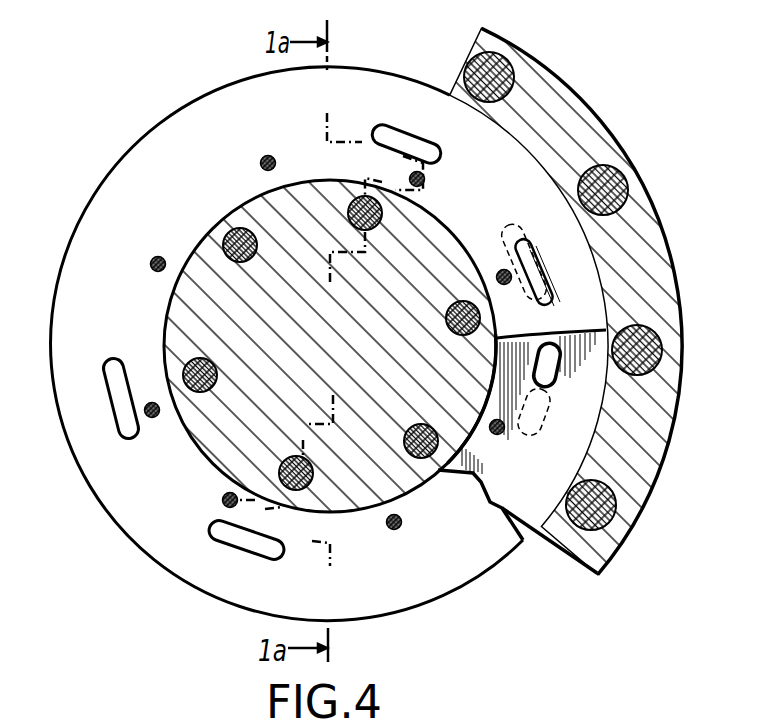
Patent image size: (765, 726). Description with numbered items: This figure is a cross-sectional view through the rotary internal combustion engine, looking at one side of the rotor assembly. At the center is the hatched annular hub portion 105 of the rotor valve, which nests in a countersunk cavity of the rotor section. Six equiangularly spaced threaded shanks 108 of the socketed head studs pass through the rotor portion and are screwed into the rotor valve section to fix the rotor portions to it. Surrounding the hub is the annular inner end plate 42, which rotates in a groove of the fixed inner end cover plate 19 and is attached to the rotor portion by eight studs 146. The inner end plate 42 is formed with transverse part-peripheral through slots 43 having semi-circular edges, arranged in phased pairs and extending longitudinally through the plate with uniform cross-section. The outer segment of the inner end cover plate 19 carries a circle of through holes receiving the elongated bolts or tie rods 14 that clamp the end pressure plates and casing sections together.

The bolts or tie rods 14 is at (506, 68).
The inner end cover plate 19 is at (567, 98).
The inner end plate 42 is at (168, 137).
The transverse part-peripheral through slots 43 is at (378, 128).
The annular hub portion 105 is at (390, 367).
The threaded shanks 108 is at (225, 244).
The studs 146 is at (262, 160).